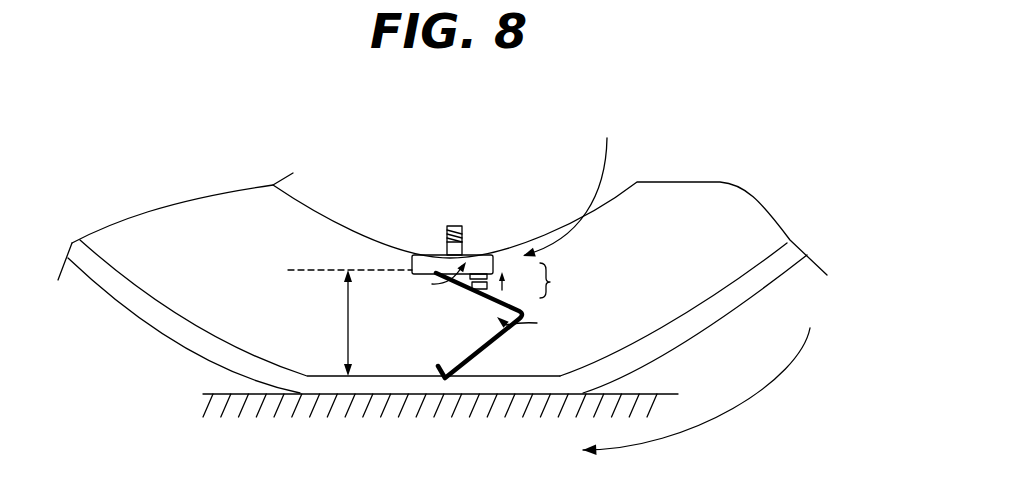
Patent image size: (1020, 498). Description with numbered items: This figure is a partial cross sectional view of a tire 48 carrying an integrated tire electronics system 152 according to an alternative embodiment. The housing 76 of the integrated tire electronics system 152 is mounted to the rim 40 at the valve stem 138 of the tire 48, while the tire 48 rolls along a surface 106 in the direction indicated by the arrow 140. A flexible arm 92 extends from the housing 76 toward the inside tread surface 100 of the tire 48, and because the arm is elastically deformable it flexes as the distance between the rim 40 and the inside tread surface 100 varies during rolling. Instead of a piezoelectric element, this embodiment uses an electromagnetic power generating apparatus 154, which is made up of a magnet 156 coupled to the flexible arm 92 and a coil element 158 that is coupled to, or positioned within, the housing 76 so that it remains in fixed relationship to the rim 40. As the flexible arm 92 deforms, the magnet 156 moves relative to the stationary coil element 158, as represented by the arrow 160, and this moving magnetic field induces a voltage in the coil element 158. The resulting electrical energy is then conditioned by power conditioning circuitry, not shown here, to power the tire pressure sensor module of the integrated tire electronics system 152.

The rim 40 is at (317, 212).
The tire 48 is at (93, 267).
The housing 76 is at (412, 256).
The flexible arm 92 is at (480, 355).
The inside tread surface 100 is at (196, 325).
The surface 106 is at (222, 393).
The valve stem 138 is at (453, 226).
The arrow 140 is at (786, 372).
The integrated tire electronics system 152 is at (575, 182).
The electromagnetic power generating apparatus 154 is at (551, 282).
The magnet 156 is at (482, 290).
The coil element 158 is at (480, 274).
The arrow 160 is at (504, 289).